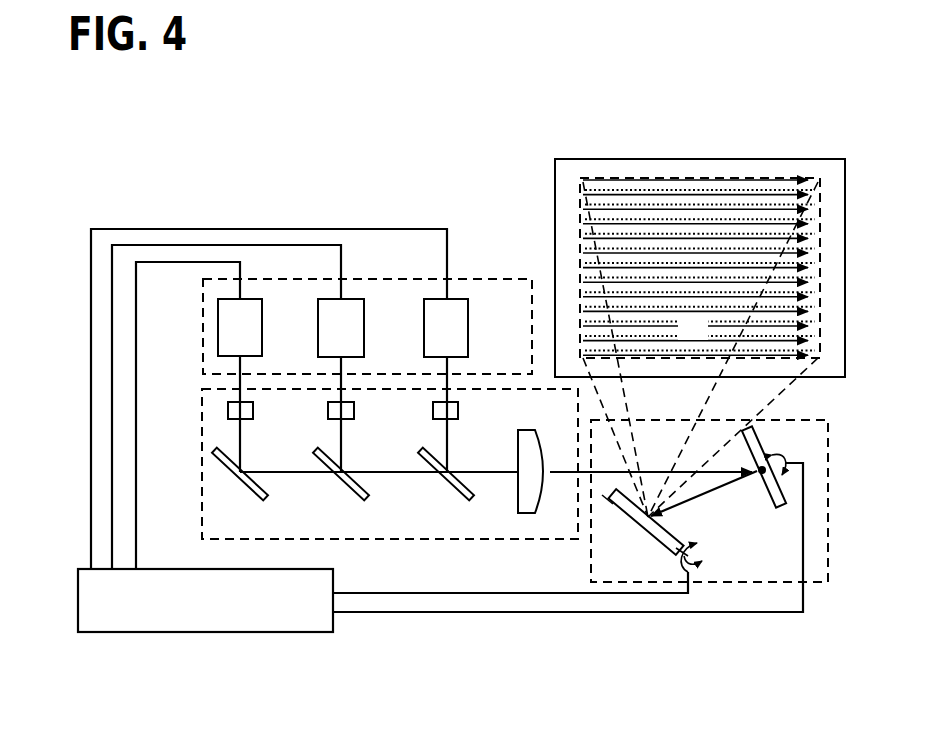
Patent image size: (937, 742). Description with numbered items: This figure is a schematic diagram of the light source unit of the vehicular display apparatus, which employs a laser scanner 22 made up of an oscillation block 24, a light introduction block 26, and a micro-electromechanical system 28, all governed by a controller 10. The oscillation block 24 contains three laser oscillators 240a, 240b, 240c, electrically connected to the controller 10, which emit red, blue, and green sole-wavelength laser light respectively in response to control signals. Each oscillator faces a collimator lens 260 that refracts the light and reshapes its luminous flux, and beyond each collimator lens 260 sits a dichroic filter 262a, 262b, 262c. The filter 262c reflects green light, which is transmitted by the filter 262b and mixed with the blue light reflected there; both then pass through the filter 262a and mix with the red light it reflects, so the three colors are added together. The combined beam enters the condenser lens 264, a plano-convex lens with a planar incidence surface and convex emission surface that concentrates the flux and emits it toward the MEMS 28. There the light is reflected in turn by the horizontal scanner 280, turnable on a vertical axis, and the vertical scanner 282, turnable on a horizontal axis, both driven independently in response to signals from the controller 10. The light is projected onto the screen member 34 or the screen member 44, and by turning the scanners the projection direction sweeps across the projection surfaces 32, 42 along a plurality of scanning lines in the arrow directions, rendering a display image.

The controller 10 is at (335, 577).
The laser scanner 22 is at (363, 359).
The oscillation block 24 is at (340, 326).
The laser oscillator 240a is at (468, 328).
The laser oscillator 240b is at (364, 328).
The laser oscillator 240c is at (262, 330).
The light introduction block 26 is at (363, 466).
The collimator lens 260 is at (253, 410).
The dichroic filter 262a is at (449, 488).
The dichroic filter 262b is at (344, 488).
The dichroic filter 262c is at (243, 488).
The condenser lens 264 is at (533, 430).
The micro-electromechanical system (MEMS) 28 is at (682, 502).
The horizontal scanner 280 is at (767, 493).
The vertical scanner 282 is at (622, 520).
The projection surface 32 is at (678, 229).
The projection surface 42 is at (582, 194).
The screen member 34 is at (691, 239).
The screen member 44 is at (735, 160).